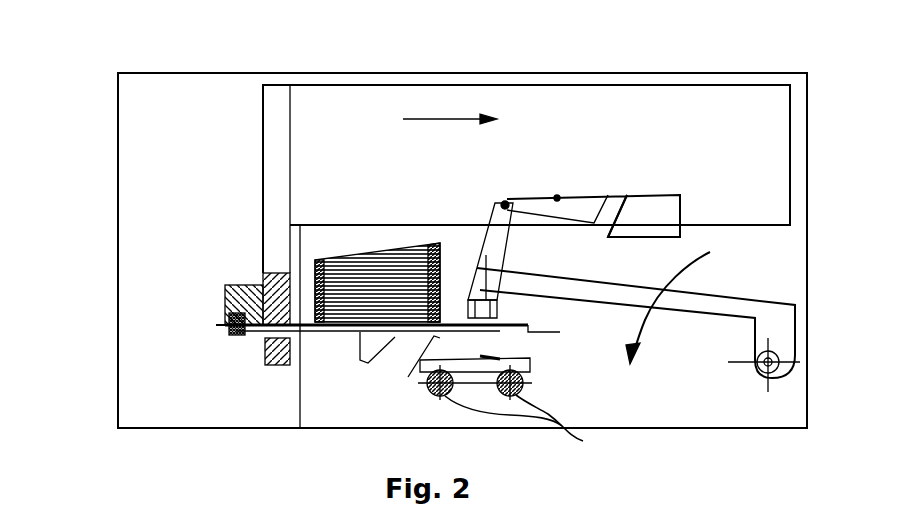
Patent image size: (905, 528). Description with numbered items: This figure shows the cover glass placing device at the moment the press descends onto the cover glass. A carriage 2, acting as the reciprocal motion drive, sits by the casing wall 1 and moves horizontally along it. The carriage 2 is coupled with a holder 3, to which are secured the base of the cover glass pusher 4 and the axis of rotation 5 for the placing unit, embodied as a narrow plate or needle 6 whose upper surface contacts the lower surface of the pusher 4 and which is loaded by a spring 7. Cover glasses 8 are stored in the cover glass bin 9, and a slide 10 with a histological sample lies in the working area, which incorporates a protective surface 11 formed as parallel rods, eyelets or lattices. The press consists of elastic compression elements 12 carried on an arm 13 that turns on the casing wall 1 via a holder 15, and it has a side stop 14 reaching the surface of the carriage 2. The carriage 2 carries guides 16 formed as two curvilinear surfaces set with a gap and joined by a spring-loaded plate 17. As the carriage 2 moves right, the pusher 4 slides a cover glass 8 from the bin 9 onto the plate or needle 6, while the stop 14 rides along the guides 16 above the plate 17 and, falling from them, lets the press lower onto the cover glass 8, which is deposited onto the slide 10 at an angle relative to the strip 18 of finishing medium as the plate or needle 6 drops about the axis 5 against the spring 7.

The casing wall 1 is at (203, 93).
The carriage 2 is at (323, 98).
The holder 3 is at (235, 285).
The cover glass pusher 4 is at (307, 226).
The axis of rotation 5 is at (249, 333).
The narrow plate or needle 6 is at (335, 333).
The spring 7 is at (237, 321).
The cover glass 8 is at (375, 243).
The cover glass bin 9 is at (463, 302).
The slide 10 is at (528, 366).
The protective surface 11 is at (526, 426).
The elastic compression element 12 is at (472, 300).
The arm 13 is at (700, 302).
The side stop 14 is at (508, 201).
The holder 15 is at (755, 370).
The guides 16 is at (547, 193).
The spring-loaded plate 17 is at (623, 194).
The strip of medium 18 is at (512, 357).